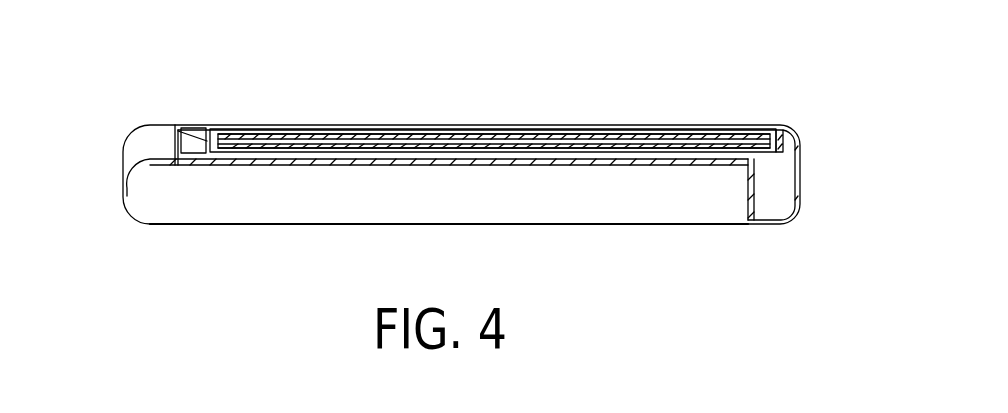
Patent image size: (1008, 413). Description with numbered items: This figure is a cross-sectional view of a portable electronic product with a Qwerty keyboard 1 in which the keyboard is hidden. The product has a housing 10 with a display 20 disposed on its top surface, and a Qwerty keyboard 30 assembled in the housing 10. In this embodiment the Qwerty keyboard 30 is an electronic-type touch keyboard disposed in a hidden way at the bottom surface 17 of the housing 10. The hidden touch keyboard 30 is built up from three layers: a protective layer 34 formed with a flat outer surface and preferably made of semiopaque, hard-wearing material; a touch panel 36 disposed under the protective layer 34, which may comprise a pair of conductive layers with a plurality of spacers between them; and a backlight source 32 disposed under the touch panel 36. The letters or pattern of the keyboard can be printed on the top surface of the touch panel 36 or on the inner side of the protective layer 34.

The portable electronic product with a Qwerty keyboard 1 is at (800, 50).
The housing 10 is at (806, 163).
The bottom surface 17 is at (130, 130).
The display 20 is at (696, 230).
The Qwerty keyboard 30 is at (322, 128).
The backlight source 32 is at (181, 143).
The protective layer 34 is at (233, 133).
The touch panel 36 is at (176, 130).